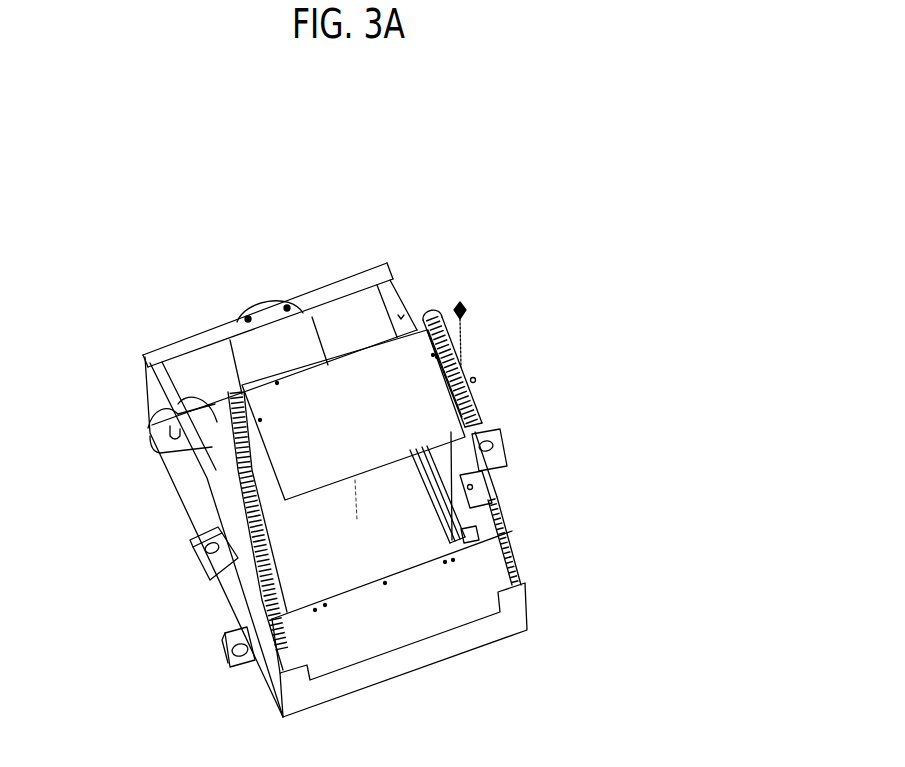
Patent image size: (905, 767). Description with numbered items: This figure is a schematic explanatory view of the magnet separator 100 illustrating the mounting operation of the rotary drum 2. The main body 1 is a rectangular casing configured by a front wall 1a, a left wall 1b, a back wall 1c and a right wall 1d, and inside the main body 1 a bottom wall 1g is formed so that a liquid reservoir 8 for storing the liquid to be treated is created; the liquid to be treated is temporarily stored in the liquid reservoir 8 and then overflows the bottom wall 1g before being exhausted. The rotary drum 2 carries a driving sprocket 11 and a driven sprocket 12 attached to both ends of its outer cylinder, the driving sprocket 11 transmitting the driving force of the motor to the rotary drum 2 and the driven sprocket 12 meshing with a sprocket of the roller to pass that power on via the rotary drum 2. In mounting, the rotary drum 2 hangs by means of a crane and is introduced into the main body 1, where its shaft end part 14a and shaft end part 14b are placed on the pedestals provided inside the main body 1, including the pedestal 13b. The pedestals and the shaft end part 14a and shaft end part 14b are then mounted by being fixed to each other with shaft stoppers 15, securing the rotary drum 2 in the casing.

The optical unit 100 is at (539, 152).
The main body 1 is at (387, 281).
The front wall 1a is at (163, 346).
The left wall 1b is at (520, 568).
The back wall 1c is at (360, 683).
The right wall 1d is at (267, 660).
The bottom wall 1g is at (383, 547).
The rotary drum 2 is at (327, 398).
The liquid reservoir 8 is at (242, 383).
The driving sprocket 11 is at (245, 427).
The driven sprocket 12 is at (480, 390).
The pedestal 13b is at (497, 497).
The shaft end part 14a is at (245, 437).
The shaft end part 14b is at (467, 363).
The shaft stopper 15 is at (460, 302).